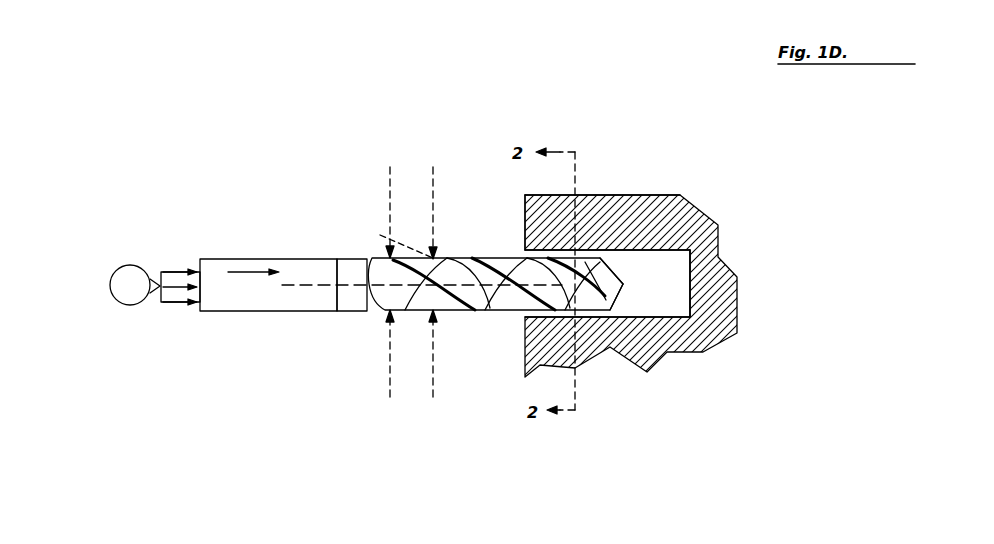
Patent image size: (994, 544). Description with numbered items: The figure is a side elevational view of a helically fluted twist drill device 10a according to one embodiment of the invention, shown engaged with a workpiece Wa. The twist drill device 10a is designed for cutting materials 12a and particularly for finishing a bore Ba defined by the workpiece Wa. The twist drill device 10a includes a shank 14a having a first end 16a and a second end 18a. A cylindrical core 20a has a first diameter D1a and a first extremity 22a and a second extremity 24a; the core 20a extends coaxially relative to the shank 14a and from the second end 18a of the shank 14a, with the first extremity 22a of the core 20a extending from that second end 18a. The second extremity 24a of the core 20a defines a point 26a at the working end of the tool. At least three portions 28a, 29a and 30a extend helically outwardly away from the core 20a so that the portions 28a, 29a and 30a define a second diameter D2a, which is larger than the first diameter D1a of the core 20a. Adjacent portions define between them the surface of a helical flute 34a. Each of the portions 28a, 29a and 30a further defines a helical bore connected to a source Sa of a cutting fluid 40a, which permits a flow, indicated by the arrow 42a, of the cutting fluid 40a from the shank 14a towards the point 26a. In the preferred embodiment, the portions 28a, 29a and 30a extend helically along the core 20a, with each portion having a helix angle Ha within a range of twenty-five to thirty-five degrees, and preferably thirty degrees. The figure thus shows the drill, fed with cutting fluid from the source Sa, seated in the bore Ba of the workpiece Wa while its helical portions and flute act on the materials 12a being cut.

The helically fluted twist drill device 10a is at (386, 138).
The materials 12a is at (700, 283).
The shank 14a is at (268, 305).
The first end 16a is at (202, 311).
The second end 18a is at (332, 304).
The cylindrical core 20a is at (588, 285).
The first extremity 22a is at (363, 257).
The second extremity 24a is at (683, 195).
The point 26a is at (624, 290).
The portion 28a is at (563, 268).
The portion 29a is at (517, 285).
The portion 30a is at (438, 308).
The helical flute 34a is at (510, 235).
The cutting fluid 40a is at (150, 294).
The arrow 42a is at (230, 272).
The source Sa is at (123, 283).
The workpiece Wa is at (634, 215).
The bore Ba is at (690, 318).
The first diameter D1a is at (440, 257).
The second diameter D2a is at (388, 294).
The helix angle Ha is at (390, 257).